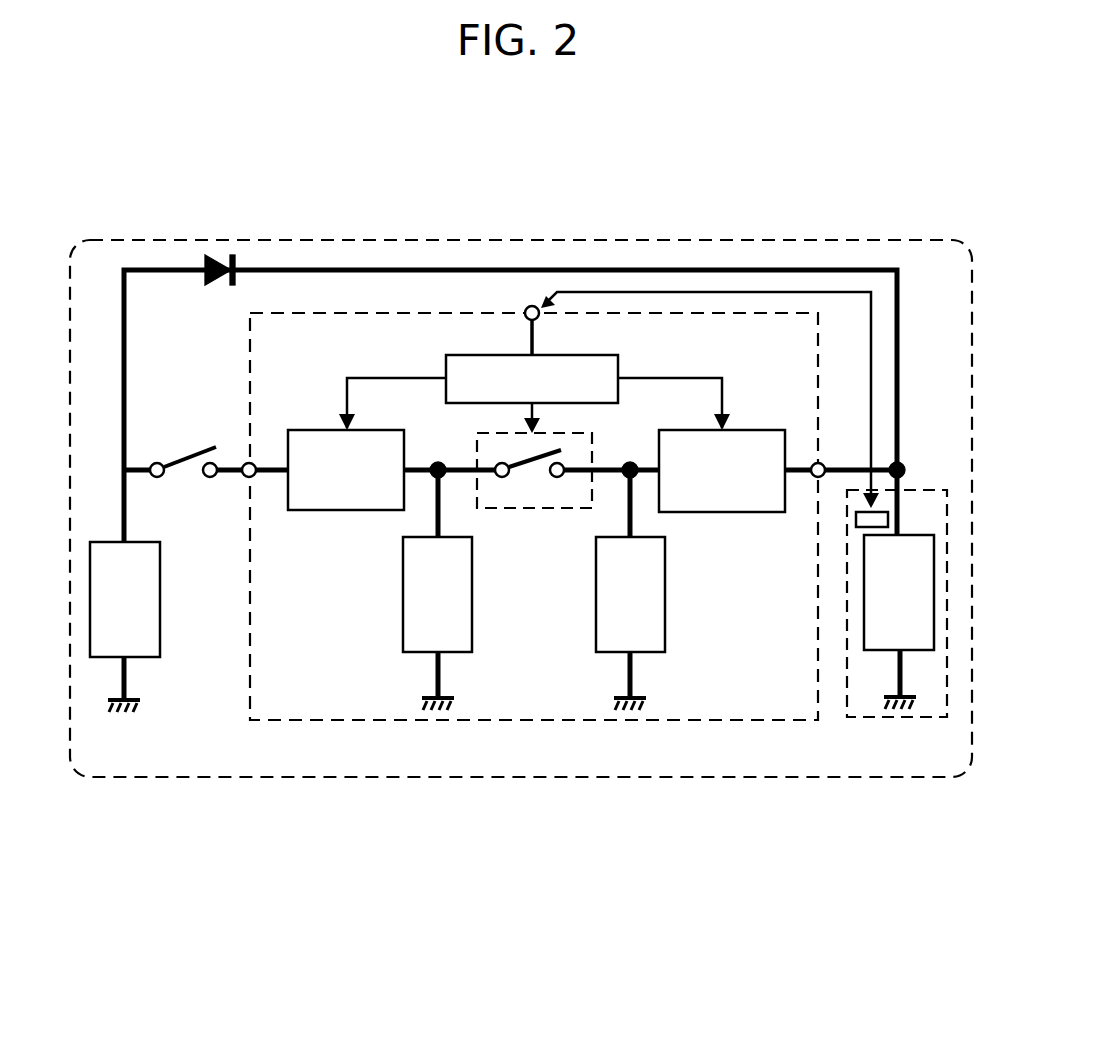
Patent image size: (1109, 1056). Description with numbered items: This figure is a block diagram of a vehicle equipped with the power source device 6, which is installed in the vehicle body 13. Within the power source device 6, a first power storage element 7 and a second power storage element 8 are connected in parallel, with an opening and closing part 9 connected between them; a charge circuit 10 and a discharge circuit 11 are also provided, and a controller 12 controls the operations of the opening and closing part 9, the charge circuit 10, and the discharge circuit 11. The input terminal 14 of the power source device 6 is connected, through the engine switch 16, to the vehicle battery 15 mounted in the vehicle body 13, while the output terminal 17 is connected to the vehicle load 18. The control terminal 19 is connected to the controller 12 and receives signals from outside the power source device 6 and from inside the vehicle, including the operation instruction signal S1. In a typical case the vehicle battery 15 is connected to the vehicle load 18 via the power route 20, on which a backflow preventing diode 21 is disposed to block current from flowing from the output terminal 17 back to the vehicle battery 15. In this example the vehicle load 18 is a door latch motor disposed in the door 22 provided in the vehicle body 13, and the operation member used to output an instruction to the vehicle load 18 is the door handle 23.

The power source device 6 is at (383, 721).
The first power storage element 7 is at (460, 652).
The second power storage element 8 is at (655, 652).
The opening and closing part 9 is at (525, 509).
The charge circuit 10 is at (345, 512).
The discharge circuit 11 is at (760, 430).
The controller 12 is at (575, 355).
The vehicle body 13 is at (742, 779).
The input terminal 14 is at (255, 480).
The vehicle battery 15 is at (100, 657).
The engine switch 16 is at (190, 480).
The output terminal 17 is at (820, 462).
The vehicle load 18 is at (915, 650).
The control terminal 19 is at (533, 306).
The power route 20 is at (322, 270).
The backflow preventing diode 21 is at (210, 258).
The door 22 is at (880, 718).
The door handle 23 is at (856, 528).
The operation instruction signal S1 is at (730, 292).